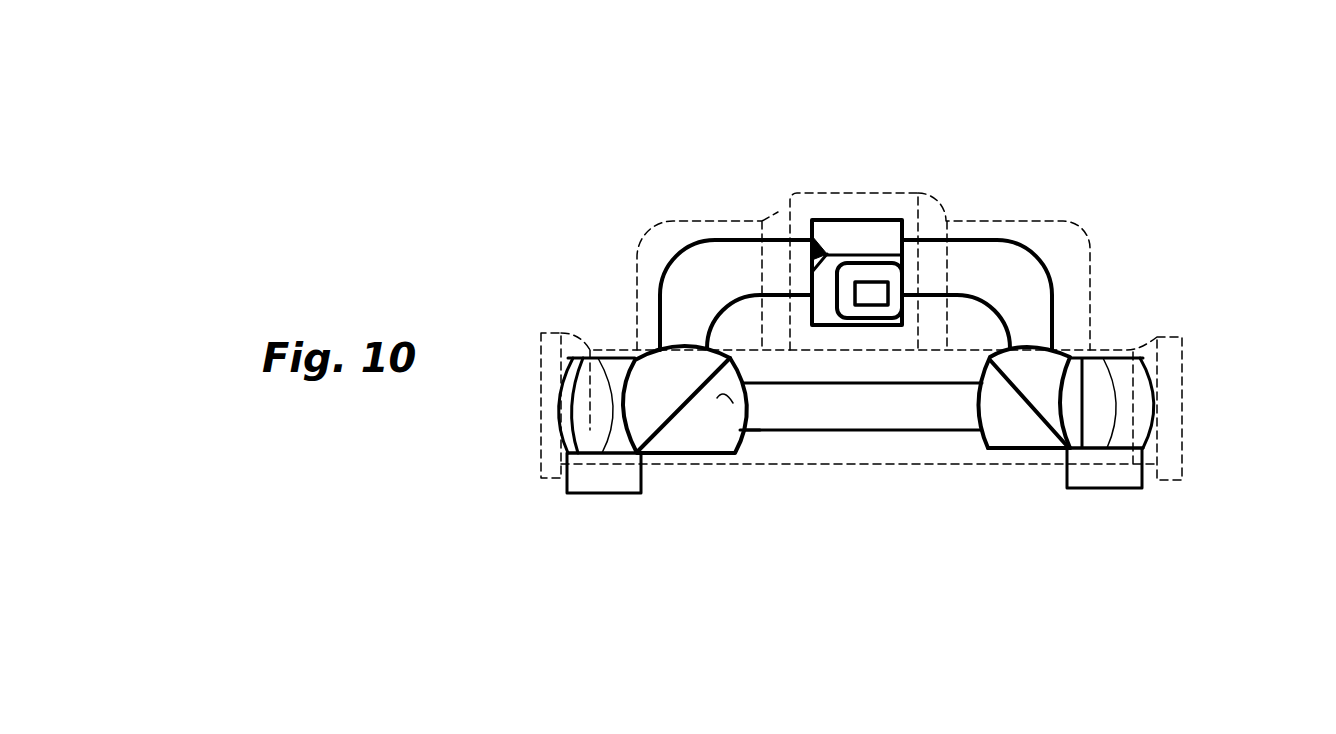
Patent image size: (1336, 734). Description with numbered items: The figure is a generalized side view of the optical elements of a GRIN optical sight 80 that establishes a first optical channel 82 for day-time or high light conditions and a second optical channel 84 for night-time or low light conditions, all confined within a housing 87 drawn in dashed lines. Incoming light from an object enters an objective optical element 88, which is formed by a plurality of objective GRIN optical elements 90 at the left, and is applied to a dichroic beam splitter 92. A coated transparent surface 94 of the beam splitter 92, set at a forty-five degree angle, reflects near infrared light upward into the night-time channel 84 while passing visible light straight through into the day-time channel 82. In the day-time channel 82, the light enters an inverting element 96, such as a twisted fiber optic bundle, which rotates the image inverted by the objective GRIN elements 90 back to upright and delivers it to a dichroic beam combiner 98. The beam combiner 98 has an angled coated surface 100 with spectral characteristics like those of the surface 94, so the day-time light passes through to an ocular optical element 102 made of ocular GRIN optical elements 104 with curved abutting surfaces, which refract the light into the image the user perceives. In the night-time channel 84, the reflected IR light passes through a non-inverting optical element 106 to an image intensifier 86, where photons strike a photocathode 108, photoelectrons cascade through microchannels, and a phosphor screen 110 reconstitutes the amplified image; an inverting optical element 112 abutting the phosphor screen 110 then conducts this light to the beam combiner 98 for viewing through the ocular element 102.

The optical sight 80 is at (1180, 280).
The first optical channel 82 is at (766, 445).
The second optical channel 84 is at (992, 215).
The image intensifier 86 is at (850, 233).
The housing 87 is at (745, 215).
The objective optical element 88 is at (600, 358).
The objective GRIN optical elements 90 is at (618, 437).
The dichroic beam splitter 92 is at (745, 433).
The transparent surface 94 is at (690, 405).
The inverting element 96 is at (925, 410).
The dichroic beam combiner 98 is at (973, 447).
The surface 100 is at (1020, 390).
The ocular optical element 102 is at (1107, 353).
The ocular GRIN optical elements 104 is at (1152, 437).
The non-inverting optical element 106 is at (693, 277).
The photocathode 108 is at (807, 256).
The phosphor screen 110 is at (903, 268).
The inverting optical element 112 is at (1043, 260).